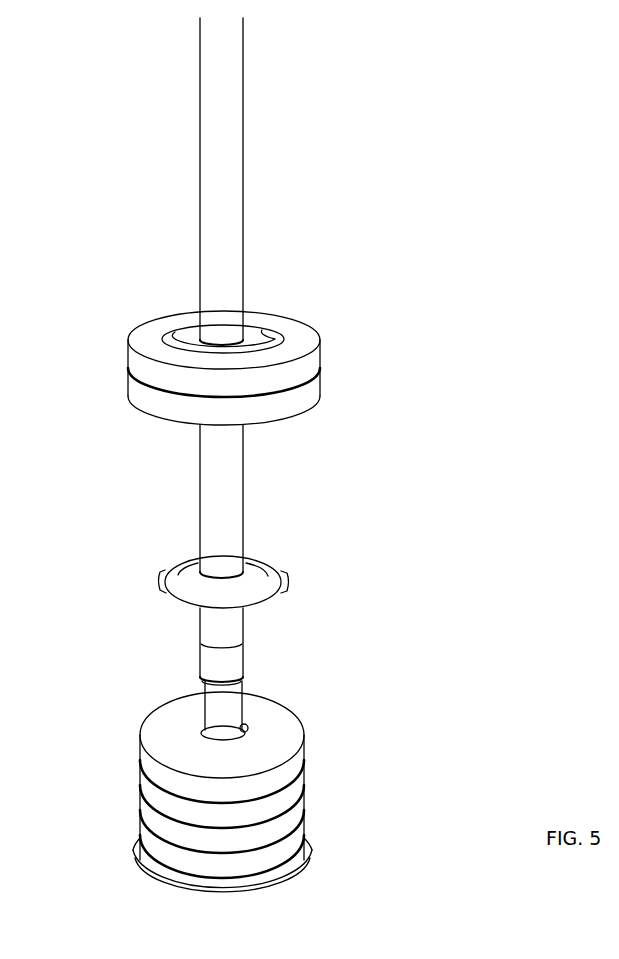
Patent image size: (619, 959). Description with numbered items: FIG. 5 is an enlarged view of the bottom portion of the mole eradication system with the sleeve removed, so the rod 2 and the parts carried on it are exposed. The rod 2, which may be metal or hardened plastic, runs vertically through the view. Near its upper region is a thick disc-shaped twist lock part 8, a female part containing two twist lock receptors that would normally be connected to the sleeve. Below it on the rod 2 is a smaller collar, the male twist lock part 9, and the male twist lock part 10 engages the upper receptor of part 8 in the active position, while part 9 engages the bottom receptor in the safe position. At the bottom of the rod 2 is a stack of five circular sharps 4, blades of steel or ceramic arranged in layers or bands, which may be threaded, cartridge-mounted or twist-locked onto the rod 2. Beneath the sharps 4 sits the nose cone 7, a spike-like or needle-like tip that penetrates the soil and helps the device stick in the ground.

The rod 2 is at (209, 150).
The sharps 4 is at (135, 825).
The nose cone 7 is at (300, 883).
The twist lock part 8 is at (308, 398).
The twist lock part 9 is at (154, 567).
The twist lock part 10 is at (186, 334).